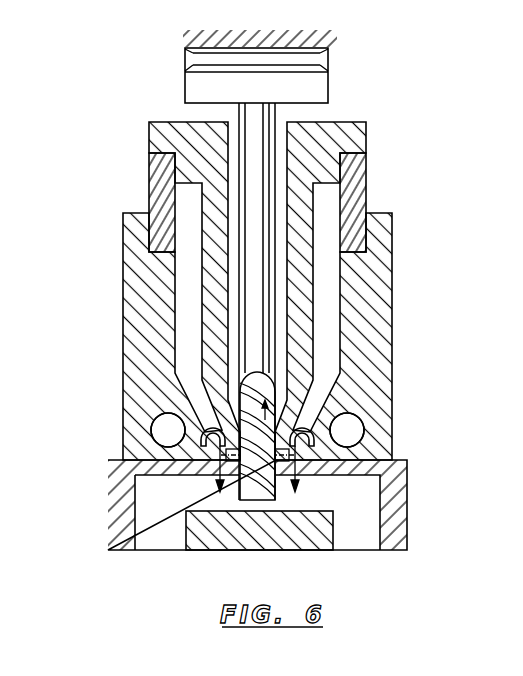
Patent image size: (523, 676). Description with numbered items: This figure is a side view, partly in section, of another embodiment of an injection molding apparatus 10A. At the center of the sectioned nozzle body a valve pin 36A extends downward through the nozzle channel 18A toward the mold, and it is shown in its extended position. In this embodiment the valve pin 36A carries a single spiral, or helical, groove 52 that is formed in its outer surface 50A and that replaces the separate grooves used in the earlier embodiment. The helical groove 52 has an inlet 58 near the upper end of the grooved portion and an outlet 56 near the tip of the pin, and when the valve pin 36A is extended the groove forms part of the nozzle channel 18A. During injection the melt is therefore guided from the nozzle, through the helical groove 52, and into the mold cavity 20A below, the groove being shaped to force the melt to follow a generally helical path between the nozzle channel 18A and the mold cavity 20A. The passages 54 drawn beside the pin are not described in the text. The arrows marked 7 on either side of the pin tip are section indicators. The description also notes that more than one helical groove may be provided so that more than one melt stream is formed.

The injection molding apparatus 10A is at (100, 157).
The valve pin 36A is at (260, 202).
The nozzle channel 18A is at (285, 240).
The outer surface 50A is at (277, 305).
The inlet 58 is at (262, 380).
The coolant passage 54 is at (247, 408).
The helical groove 52 is at (392, 420).
The mold cavity 20A is at (370, 502).
The outlet 56 is at (263, 500).
The section line 7 is at (259, 478).